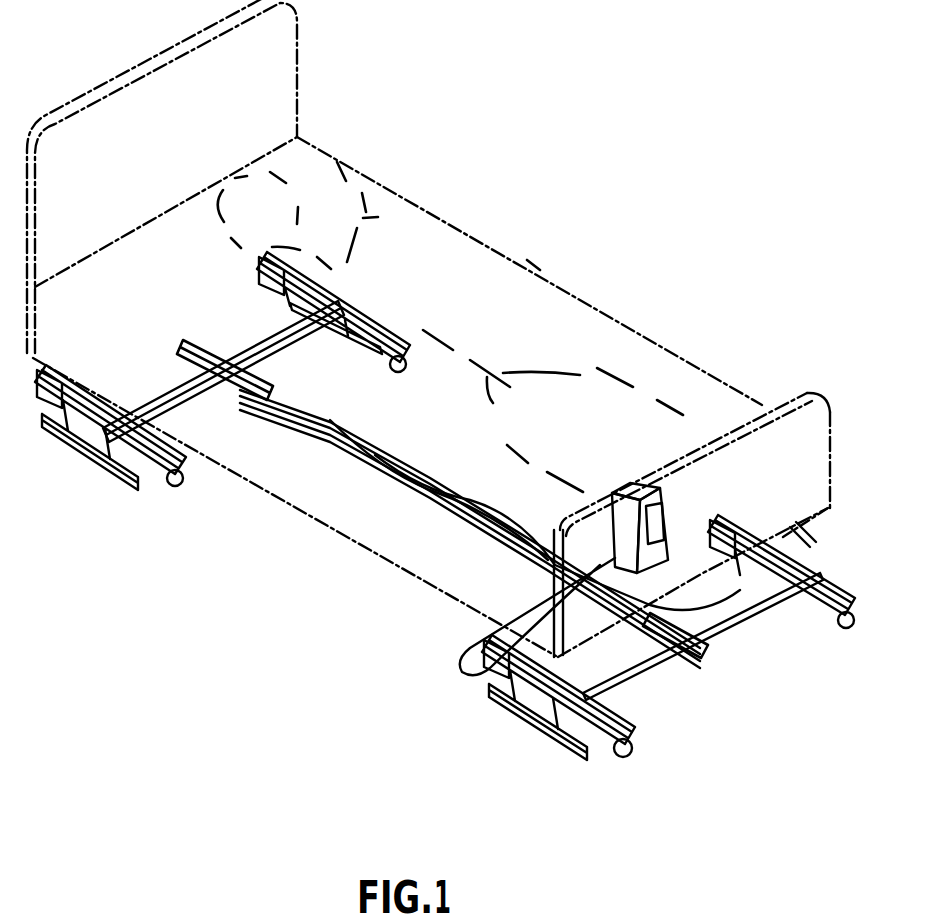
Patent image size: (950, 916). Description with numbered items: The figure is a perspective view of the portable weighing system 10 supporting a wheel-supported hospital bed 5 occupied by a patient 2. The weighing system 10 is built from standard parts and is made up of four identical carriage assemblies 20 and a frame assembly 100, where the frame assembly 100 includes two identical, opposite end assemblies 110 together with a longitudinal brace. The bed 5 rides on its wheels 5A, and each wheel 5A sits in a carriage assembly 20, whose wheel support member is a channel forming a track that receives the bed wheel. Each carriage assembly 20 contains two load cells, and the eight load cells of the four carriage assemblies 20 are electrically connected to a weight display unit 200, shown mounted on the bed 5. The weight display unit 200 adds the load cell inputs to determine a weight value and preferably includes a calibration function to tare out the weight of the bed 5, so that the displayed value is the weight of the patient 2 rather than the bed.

The hospital bed 5 is at (227, 118).
The portable weighing system 10 is at (380, 248).
The patient 2 is at (367, 286).
The carriage assembly 20 is at (392, 300).
The frame assembly 100 is at (447, 450).
The end assembly 110 is at (217, 345).
The weight display unit 200 is at (674, 507).
The wheels 5A is at (830, 553).